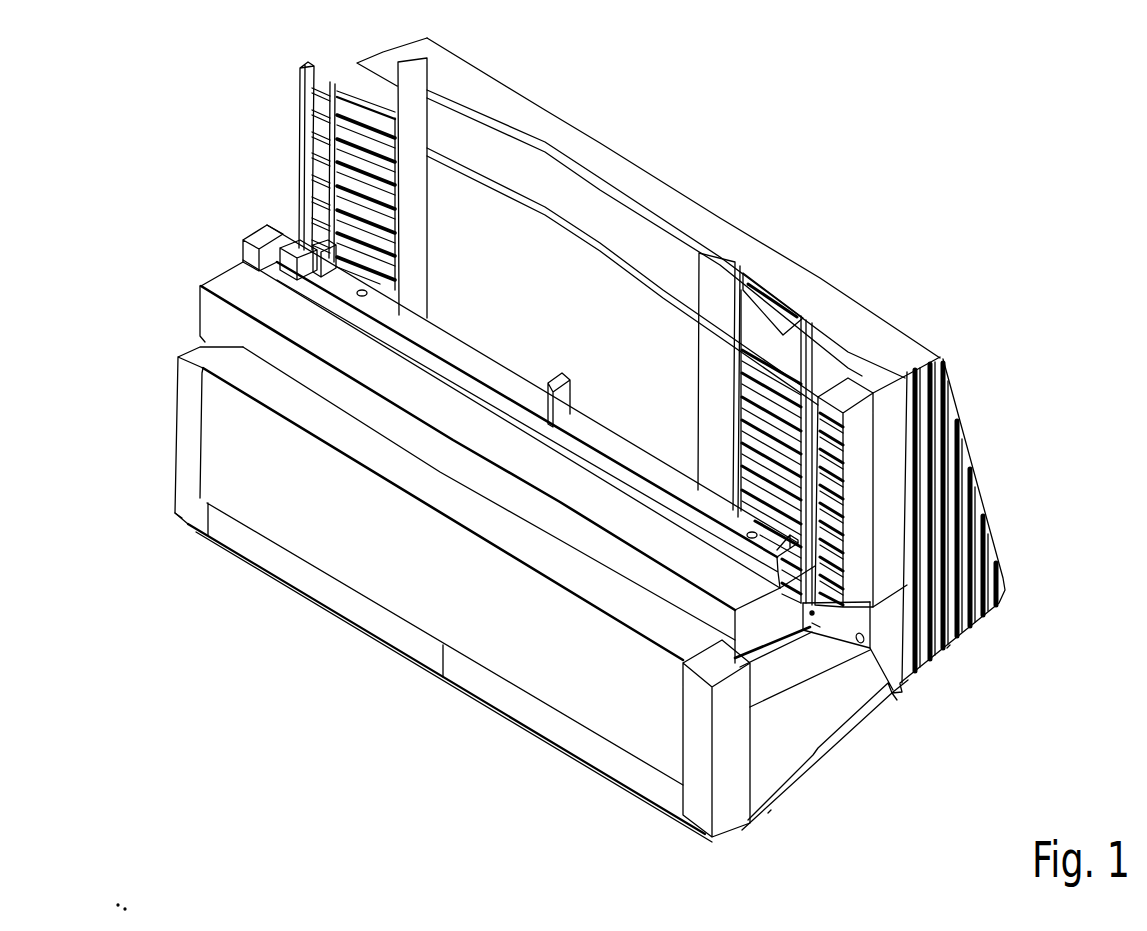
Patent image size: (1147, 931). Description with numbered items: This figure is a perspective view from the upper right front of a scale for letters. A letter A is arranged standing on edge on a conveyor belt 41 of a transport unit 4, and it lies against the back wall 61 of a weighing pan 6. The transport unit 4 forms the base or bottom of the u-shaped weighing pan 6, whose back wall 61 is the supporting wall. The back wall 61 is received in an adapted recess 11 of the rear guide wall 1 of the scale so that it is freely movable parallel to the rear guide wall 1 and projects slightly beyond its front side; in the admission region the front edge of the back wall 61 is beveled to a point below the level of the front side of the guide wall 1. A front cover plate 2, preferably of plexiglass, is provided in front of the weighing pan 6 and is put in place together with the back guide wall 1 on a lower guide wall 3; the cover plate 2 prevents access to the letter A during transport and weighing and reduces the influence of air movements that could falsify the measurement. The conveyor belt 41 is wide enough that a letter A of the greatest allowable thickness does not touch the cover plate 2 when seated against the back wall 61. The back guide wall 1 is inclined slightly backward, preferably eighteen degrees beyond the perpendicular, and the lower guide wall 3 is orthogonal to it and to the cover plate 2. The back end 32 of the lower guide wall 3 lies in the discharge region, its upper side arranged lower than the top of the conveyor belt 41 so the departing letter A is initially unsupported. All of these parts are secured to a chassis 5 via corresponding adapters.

The letter A is at (567, 170).
The rear guide wall 1 is at (873, 523).
The recess 11 is at (943, 360).
The front cover plate 2 is at (298, 72).
The lower guide wall 3 is at (812, 613).
The back end 32 is at (820, 627).
The transport unit 4 is at (893, 693).
The conveyor belt 41 is at (817, 613).
The chassis 5 is at (947, 648).
The weighing pan 6 is at (826, 397).
The back wall 61 is at (830, 393).